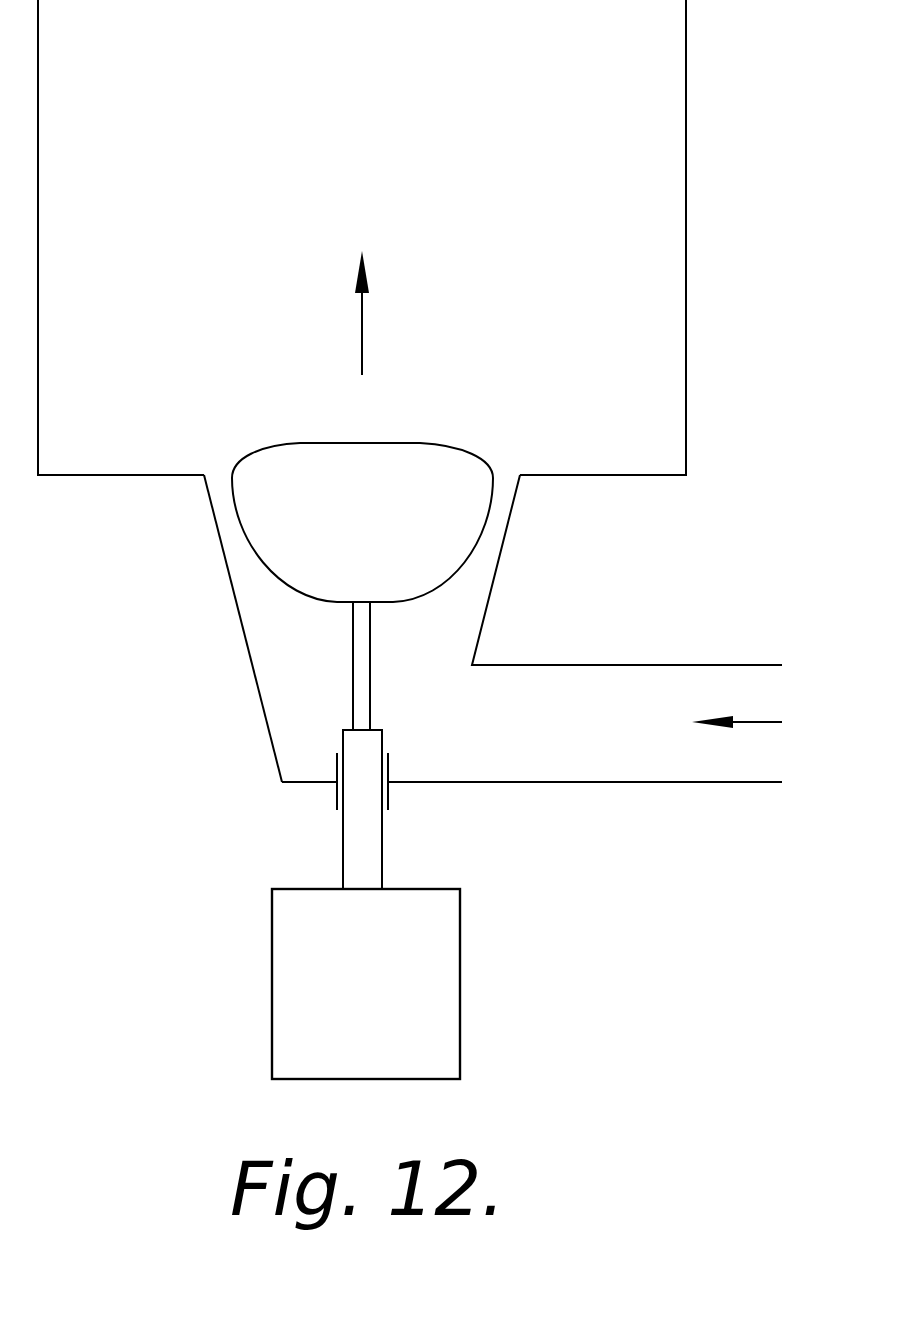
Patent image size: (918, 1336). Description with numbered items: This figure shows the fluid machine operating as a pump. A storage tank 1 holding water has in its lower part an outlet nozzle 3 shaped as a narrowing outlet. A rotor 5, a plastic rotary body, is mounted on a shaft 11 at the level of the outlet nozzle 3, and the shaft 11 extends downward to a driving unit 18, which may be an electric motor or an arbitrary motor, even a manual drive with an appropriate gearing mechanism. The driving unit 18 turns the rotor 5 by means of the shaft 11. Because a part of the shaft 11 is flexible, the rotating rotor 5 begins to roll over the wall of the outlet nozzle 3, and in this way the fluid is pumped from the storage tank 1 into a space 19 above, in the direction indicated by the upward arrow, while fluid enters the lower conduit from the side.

The storage tank 1 is at (603, 735).
The outlet nozzle 3 is at (232, 590).
The rotor 5 is at (458, 588).
The shaft 11 is at (360, 845).
The driving unit 18 is at (433, 1017).
The space 19 is at (620, 376).